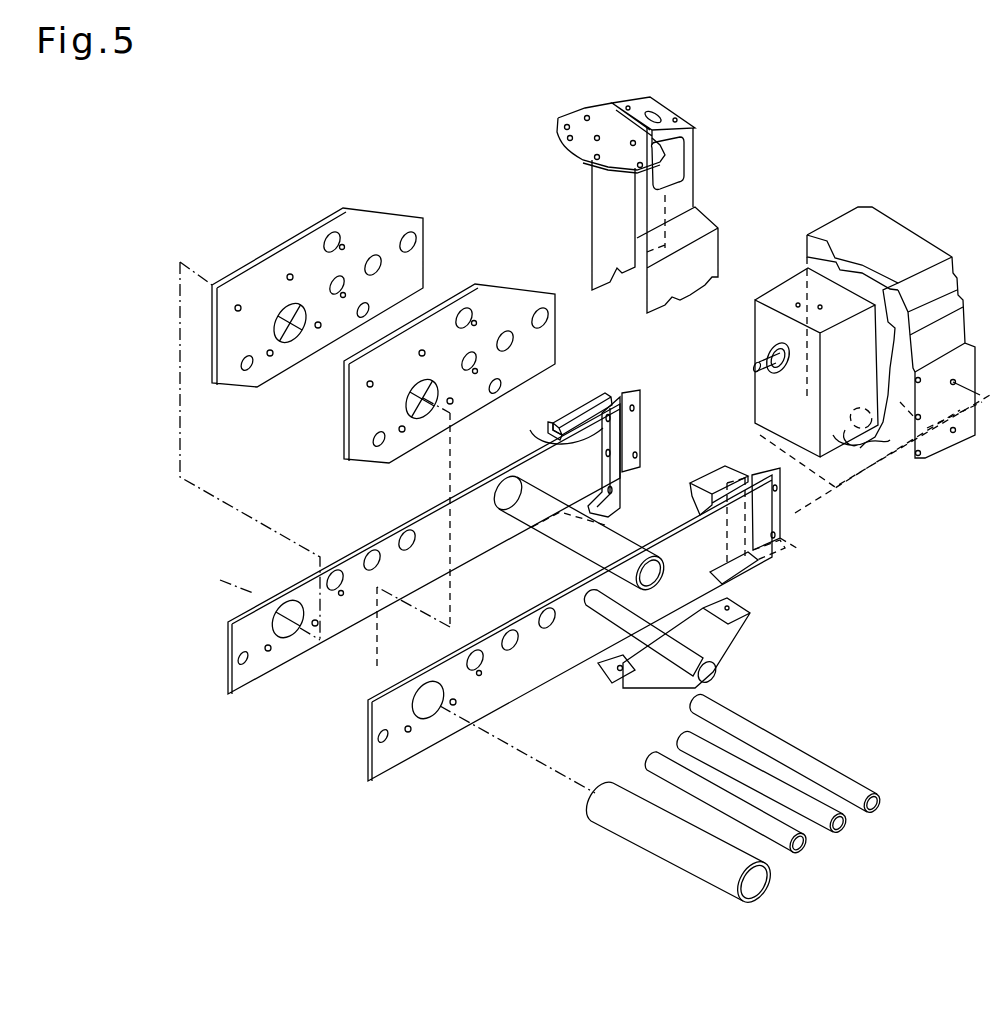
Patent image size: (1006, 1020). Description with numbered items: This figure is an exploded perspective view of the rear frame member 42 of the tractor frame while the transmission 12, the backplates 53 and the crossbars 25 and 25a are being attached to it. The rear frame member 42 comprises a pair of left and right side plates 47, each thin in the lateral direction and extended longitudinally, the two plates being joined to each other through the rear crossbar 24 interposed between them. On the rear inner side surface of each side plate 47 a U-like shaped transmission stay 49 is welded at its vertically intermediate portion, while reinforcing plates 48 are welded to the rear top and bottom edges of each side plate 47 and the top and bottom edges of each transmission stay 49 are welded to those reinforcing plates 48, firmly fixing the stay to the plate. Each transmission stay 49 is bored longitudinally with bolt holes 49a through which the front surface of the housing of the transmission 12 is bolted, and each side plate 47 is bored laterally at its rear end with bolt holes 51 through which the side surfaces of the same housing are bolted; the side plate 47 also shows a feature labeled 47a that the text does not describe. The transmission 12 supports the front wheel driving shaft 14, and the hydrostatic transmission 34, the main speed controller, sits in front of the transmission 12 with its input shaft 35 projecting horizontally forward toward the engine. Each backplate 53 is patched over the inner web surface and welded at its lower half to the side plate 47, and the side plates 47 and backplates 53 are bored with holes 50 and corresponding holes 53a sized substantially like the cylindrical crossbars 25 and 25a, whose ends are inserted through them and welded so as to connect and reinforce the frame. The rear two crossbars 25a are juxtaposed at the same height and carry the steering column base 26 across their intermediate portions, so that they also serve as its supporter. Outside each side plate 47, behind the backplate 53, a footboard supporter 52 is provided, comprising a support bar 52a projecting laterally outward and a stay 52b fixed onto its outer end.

The transmission 12 is at (926, 206).
The front wheel driving shaft 14 is at (866, 488).
The rear crossbar 24 is at (568, 557).
The crossbar 25 is at (647, 840).
The crossbar 25a is at (767, 778).
The steering column base 26 is at (722, 237).
The hydrostatic transmission 34 is at (770, 286).
The input shaft 35 is at (756, 370).
The rear frame member 42 is at (192, 620).
The side plate 47 is at (238, 696).
The hole 47a is at (287, 603).
The reinforcing plate 48 is at (605, 411).
The transmission stay 49 is at (615, 395).
The bolt hole 49a is at (556, 432).
The hole 50 is at (372, 550).
The bolt hole 51 is at (644, 455).
The footboard supporter 52 is at (729, 660).
The support bar 52a is at (590, 670).
The stay 52b is at (760, 633).
The backplate 53 is at (232, 386).
The hole 53a is at (373, 257).